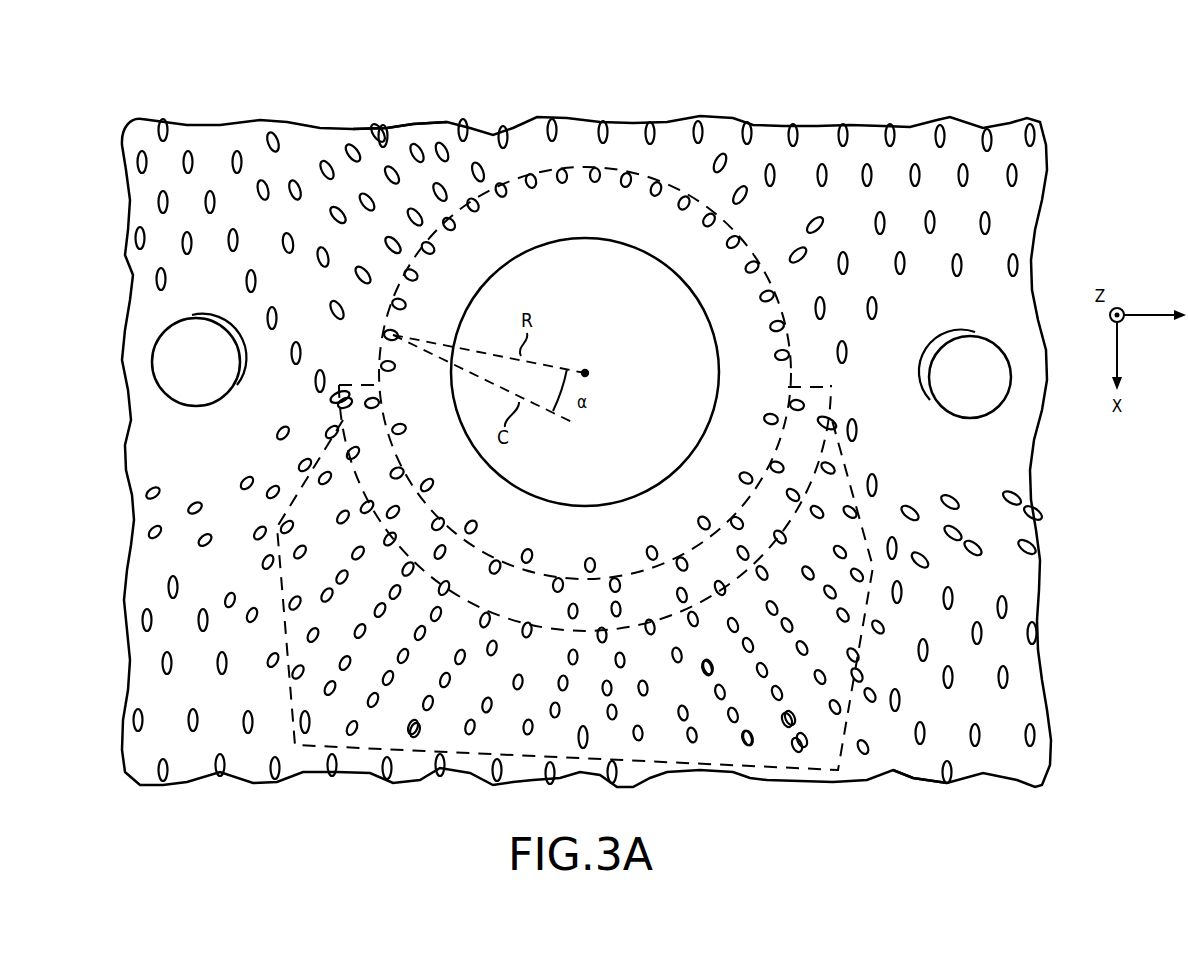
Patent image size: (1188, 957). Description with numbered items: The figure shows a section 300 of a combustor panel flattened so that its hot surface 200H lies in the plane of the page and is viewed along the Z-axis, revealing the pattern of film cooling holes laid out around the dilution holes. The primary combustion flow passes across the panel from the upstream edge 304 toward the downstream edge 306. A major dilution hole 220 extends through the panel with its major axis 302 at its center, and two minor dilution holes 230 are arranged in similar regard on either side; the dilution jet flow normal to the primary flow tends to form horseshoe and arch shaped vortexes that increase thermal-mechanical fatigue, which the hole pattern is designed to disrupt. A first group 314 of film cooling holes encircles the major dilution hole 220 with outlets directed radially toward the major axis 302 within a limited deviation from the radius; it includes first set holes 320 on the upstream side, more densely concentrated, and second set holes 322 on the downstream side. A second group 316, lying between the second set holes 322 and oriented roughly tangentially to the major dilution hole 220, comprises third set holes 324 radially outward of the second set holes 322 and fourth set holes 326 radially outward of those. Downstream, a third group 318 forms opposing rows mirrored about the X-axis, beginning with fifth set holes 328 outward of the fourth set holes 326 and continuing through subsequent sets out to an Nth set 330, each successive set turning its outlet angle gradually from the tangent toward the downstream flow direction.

The section 300 is at (852, 102).
The upstream edge 304 is at (413, 123).
The downstream edge 306 is at (910, 781).
The minor dilution holes 230 is at (187, 318).
The major dilution hole 220 is at (631, 314).
The major axis 302 is at (587, 373).
The first set holes 320 is at (535, 187).
The first group 314 is at (733, 230).
The second group 316 is at (835, 398).
The third group 318 is at (838, 470).
The second set holes 322 is at (402, 420).
The third set holes 324 is at (440, 517).
The fourth set holes 326 is at (502, 560).
The fifth set holes 328 is at (478, 628).
The Nth set 330 is at (294, 678).
The hot surface 200H is at (1028, 178).